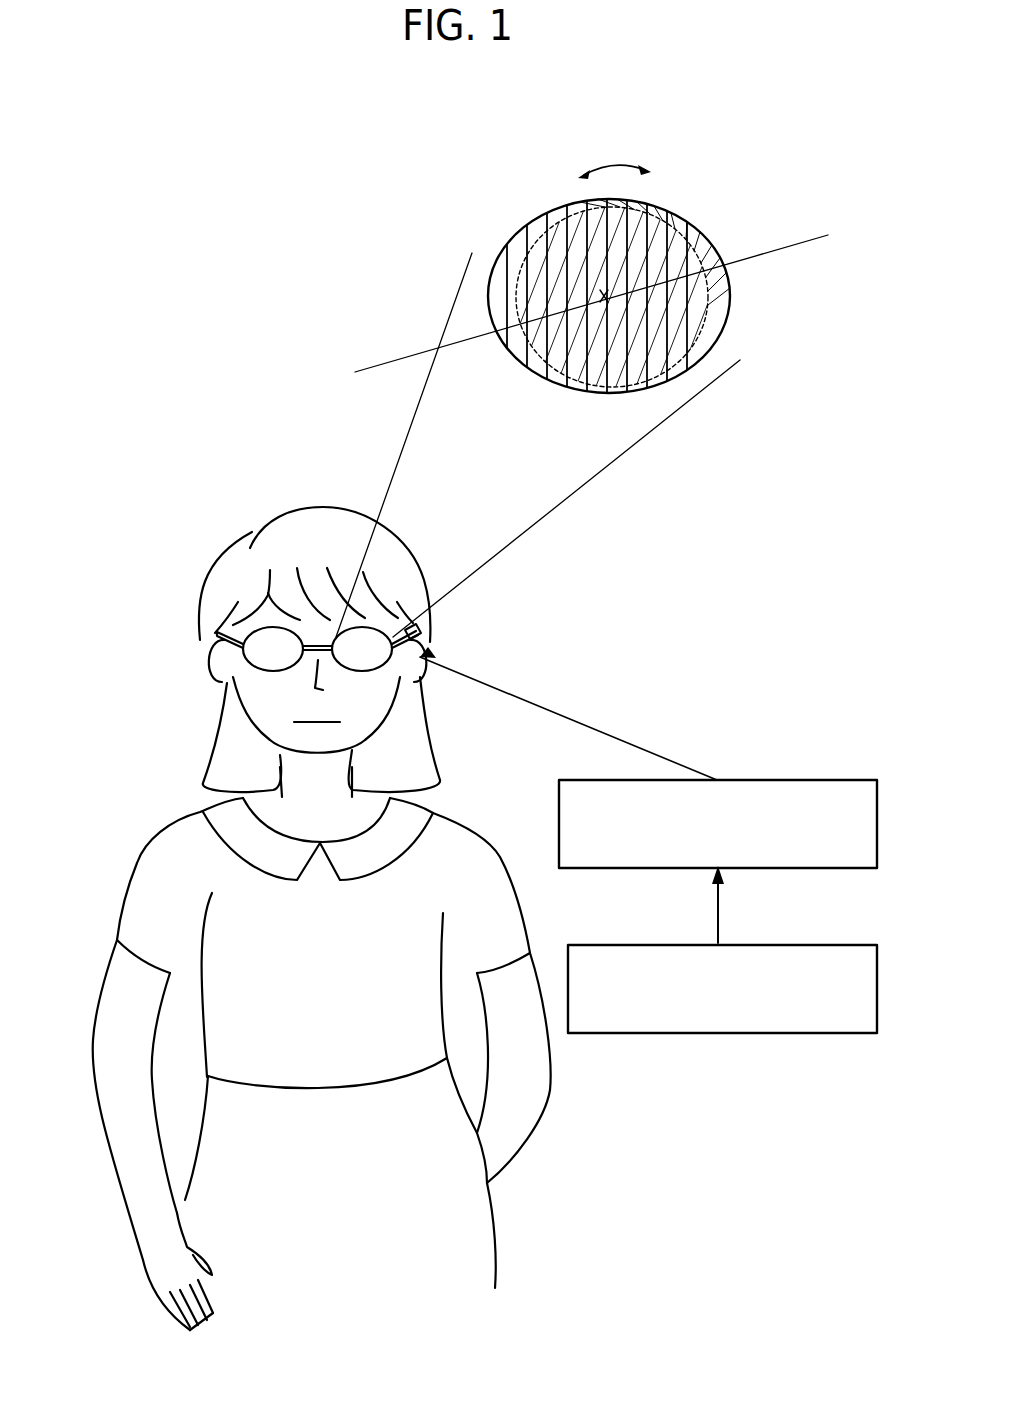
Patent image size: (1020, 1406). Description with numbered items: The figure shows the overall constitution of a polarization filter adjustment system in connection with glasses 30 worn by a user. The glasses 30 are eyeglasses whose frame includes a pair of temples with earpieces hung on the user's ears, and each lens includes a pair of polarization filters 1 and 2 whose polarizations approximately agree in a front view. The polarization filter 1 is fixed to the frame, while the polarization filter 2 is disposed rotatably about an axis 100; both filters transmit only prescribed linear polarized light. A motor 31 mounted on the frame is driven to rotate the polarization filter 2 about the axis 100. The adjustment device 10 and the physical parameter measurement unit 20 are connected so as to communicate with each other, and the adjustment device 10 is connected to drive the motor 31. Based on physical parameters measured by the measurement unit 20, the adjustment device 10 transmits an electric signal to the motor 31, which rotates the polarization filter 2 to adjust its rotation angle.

The polarization filter 1 is at (547, 220).
The polarization filter 2 is at (673, 218).
The axis 100 is at (603, 296).
The glasses 30 is at (228, 652).
The motor 31 is at (416, 633).
The adjustment device 10 is at (767, 780).
The physical parameter measurement unit 20 is at (780, 945).